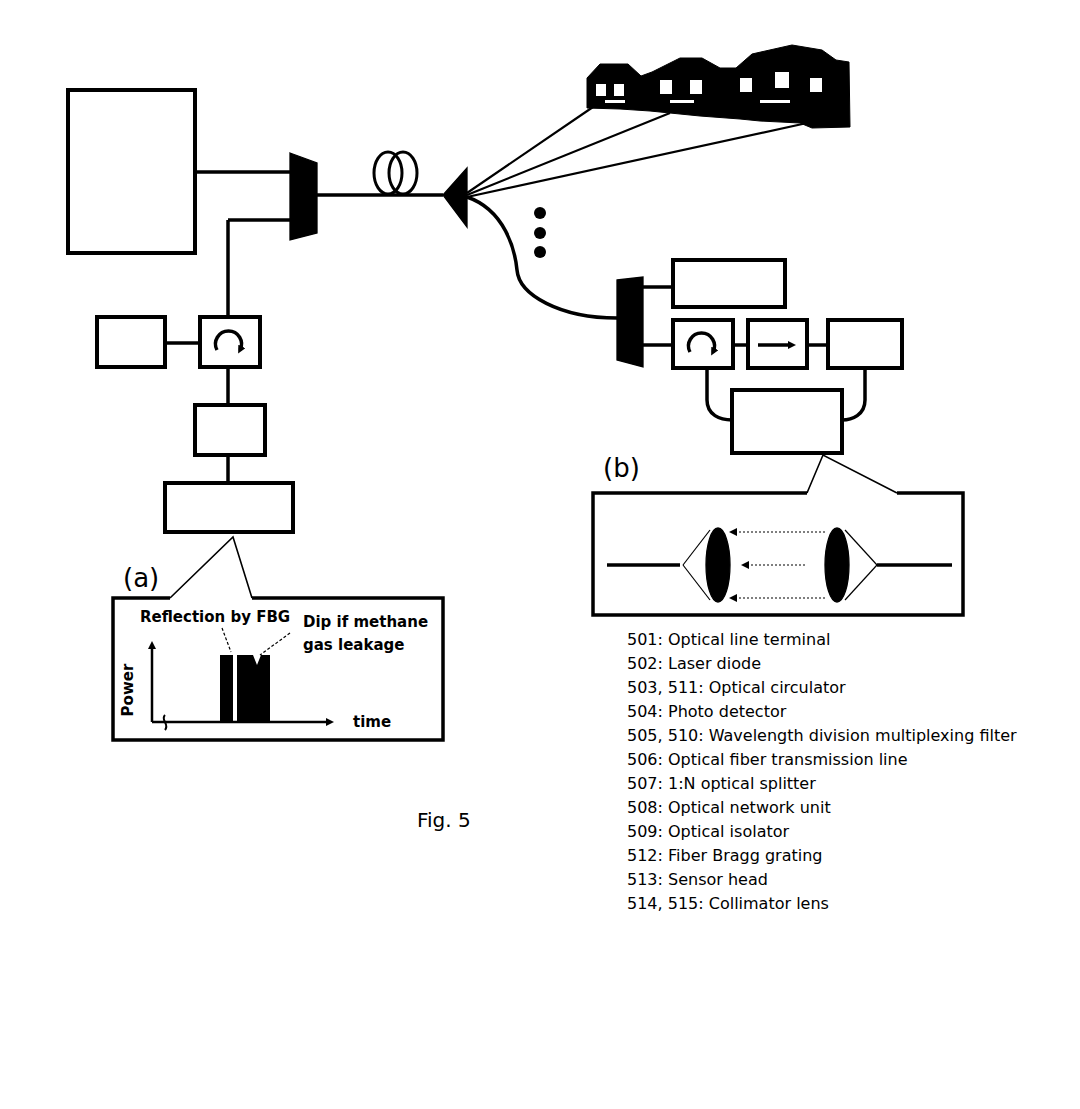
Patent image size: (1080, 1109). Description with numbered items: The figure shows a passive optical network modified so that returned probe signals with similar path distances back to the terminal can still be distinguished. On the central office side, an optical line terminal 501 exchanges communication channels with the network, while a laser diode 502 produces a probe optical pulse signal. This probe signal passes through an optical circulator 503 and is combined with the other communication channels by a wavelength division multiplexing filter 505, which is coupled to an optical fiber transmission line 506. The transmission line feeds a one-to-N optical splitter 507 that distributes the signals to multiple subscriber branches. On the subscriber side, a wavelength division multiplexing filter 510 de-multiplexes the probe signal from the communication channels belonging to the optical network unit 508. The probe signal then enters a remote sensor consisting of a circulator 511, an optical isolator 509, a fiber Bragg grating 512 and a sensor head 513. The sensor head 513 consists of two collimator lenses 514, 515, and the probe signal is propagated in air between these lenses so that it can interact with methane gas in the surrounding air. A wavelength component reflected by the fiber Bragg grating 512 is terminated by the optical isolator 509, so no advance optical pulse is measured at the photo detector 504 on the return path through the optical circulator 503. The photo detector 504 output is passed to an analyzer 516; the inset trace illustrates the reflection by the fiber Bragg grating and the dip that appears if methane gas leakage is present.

The optical line terminal 501 is at (182, 110).
The laser diode 502 is at (155, 322).
The optical circulator 503 is at (254, 322).
The photo detector 504 is at (253, 410).
The wavelength division multiplexing filter 505 is at (312, 163).
The optical fiber transmission line 506 is at (407, 168).
The 1:N optical splitter 507 is at (466, 178).
The optical network unit 508 is at (777, 280).
The optical isolator 509 is at (800, 322).
The wavelength division multiplexing filter 510 is at (636, 277).
The optical circulator 511 is at (680, 367).
The fiber Bragg grating 512 is at (890, 322).
The sensor head 513 is at (737, 452).
The collimator lens 514 is at (718, 530).
The collimator lens 515 is at (836, 528).
The analyzer 516 is at (285, 490).